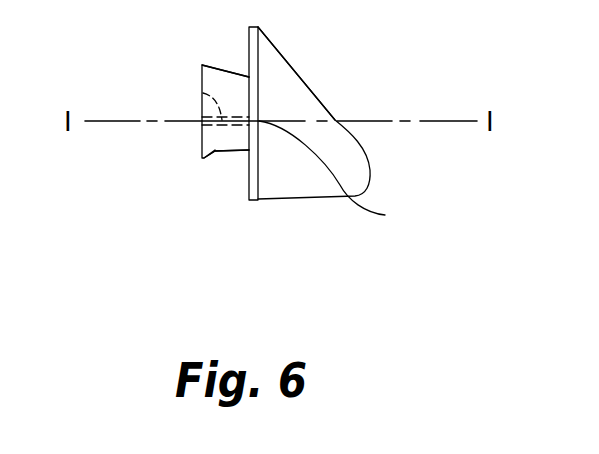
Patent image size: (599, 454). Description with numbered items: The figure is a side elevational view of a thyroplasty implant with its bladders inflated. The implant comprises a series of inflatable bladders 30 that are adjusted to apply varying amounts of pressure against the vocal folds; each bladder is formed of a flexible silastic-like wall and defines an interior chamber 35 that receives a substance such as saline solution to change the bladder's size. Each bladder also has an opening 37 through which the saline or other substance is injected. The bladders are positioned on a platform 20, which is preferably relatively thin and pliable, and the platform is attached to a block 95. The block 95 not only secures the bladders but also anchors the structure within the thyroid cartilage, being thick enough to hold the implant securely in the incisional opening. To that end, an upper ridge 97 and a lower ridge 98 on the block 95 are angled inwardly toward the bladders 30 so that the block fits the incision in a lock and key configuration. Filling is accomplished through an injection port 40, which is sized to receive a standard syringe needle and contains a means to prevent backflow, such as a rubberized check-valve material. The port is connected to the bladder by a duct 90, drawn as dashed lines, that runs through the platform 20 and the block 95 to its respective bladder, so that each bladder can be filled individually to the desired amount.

The platform 20 is at (204, 160).
The inflatable bladder 30 is at (368, 155).
The chamber 35 is at (280, 73).
The opening 37 is at (343, 175).
The injection port 40 is at (197, 126).
The duct 90 is at (203, 93).
The block 95 is at (255, 200).
The upper ridge 97 is at (229, 67).
The lower ridge 98 is at (218, 153).